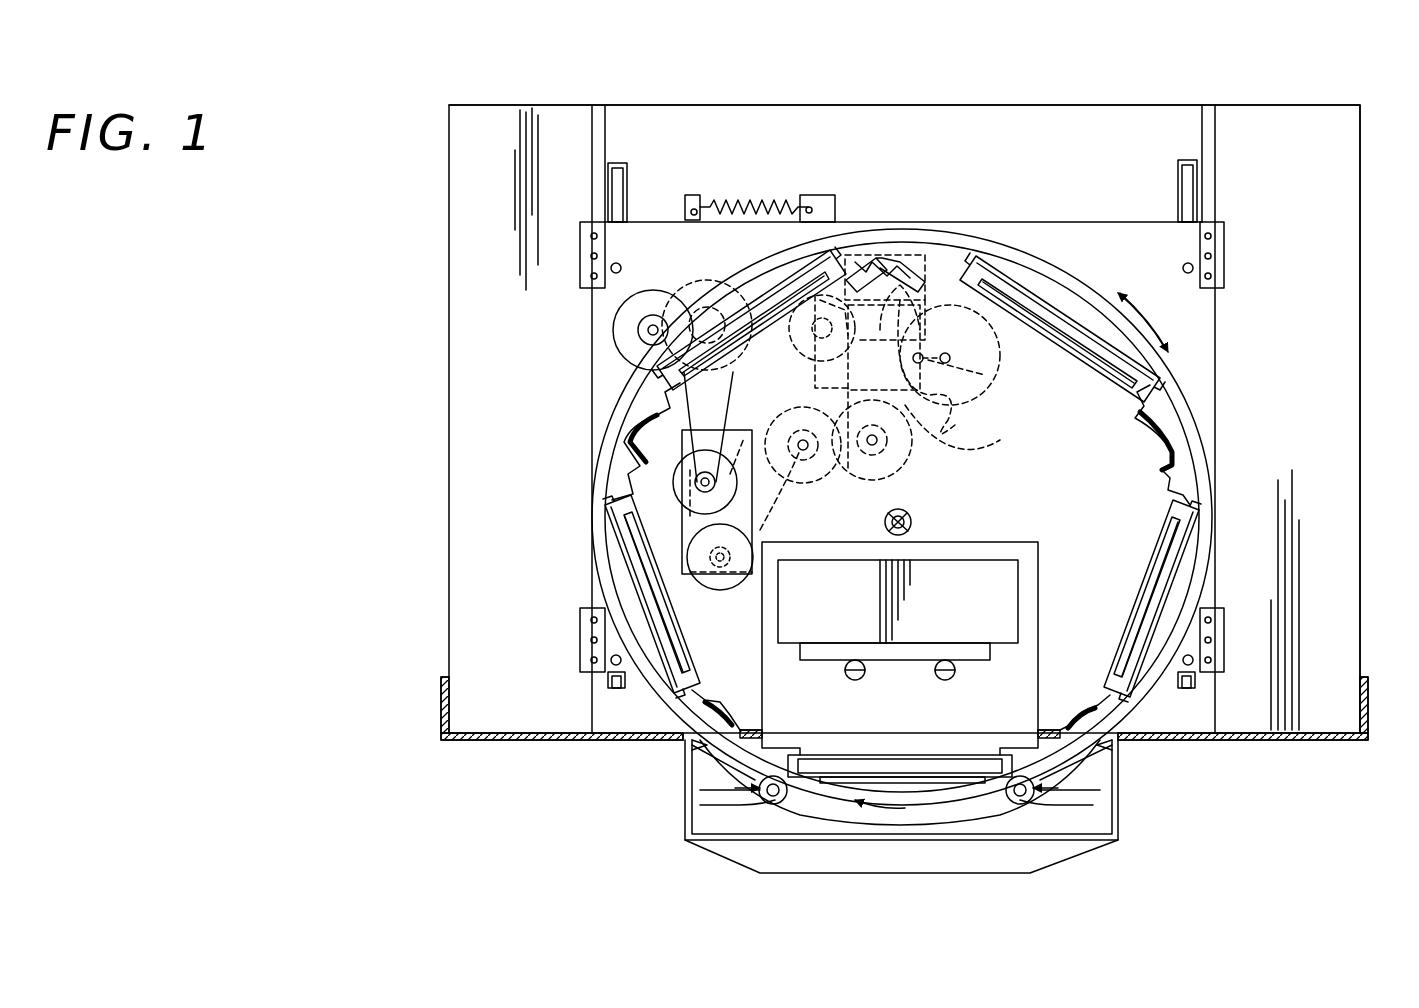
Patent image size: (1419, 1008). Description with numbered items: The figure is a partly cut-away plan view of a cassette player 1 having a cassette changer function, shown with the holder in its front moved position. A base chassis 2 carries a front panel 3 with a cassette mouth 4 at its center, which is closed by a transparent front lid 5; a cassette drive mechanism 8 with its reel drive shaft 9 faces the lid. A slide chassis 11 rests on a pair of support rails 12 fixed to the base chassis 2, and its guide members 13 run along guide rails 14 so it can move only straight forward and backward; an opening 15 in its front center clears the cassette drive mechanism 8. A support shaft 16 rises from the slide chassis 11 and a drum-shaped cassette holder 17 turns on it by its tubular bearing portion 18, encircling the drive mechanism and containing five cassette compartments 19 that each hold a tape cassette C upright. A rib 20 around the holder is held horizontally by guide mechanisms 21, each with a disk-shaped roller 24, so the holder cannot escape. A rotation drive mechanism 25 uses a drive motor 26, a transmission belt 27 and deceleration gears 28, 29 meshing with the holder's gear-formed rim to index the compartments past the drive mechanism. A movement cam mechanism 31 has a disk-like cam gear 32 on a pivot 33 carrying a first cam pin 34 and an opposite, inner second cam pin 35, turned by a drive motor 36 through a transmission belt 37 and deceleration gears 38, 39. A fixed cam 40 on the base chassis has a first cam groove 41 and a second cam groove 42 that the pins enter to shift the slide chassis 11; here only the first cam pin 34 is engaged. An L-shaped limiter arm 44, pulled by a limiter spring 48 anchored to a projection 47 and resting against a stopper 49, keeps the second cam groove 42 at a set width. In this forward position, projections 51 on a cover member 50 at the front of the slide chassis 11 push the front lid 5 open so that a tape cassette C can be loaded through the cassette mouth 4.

The cassette player 1 is at (392, 117).
The base chassis 2 is at (1034, 130).
The front panel 3 is at (1300, 742).
The cassette mouth 4 is at (685, 752).
The front lid 5 is at (1118, 832).
The cassette drive mechanism 8 is at (1010, 605).
The reel drive shaft 9 is at (942, 680).
The slide chassis 11 is at (1197, 306).
The support rails 12 is at (597, 194).
The guide members 13 is at (580, 248).
The guide rails 14 is at (600, 130).
The opening 15 is at (1038, 548).
The support shaft 16 is at (907, 512).
The cassette holder 17 is at (1165, 390).
The tubular bearing portion 18 is at (911, 522).
The cassette compartments 19 is at (795, 320).
The rib 20 is at (1205, 702).
The guide mechanisms 21 is at (790, 790).
The disk-shaped roller 24 is at (765, 795).
The rotation drive mechanism 25 is at (665, 445).
The drive motor 26 is at (673, 485).
The transmission belt 27 is at (655, 400).
The deceleration gear 28 is at (693, 292).
The deceleration gear 29 is at (633, 310).
The movement cam mechanism 31 is at (968, 432).
The cam gear 32 is at (992, 330).
The pivot 33 is at (960, 415).
The first cam pin 34 is at (852, 302).
The second cam pin 35 is at (985, 362).
The drive motor 36 is at (697, 548).
The transmission belt 37 is at (770, 527).
The deceleration gear 38 is at (800, 410).
The deceleration gear 39 is at (858, 368).
The fixed cam 40 is at (875, 246).
The first cam groove 41 is at (940, 238).
The second cam groove 42 is at (916, 250).
The limiter arm 44 is at (832, 195).
The projection 47 is at (697, 196).
The limiter spring 48 is at (765, 205).
The stopper 49 is at (805, 300).
The cover member 50 is at (762, 871).
The projections 51 is at (745, 786).
The tape cassette C is at (775, 325).